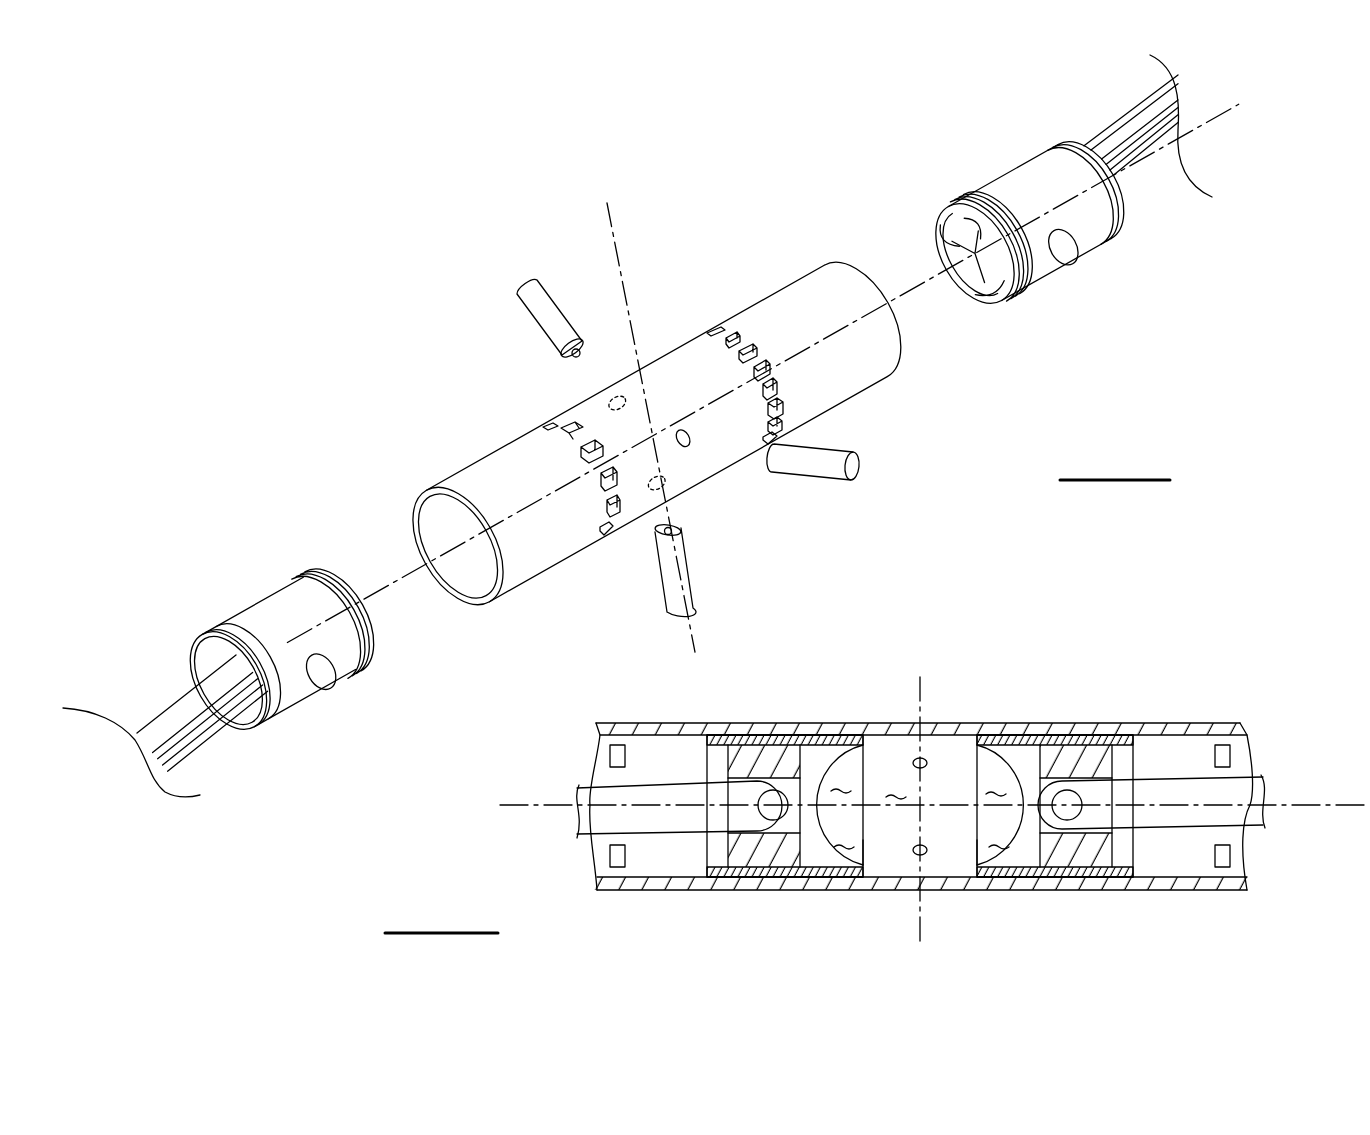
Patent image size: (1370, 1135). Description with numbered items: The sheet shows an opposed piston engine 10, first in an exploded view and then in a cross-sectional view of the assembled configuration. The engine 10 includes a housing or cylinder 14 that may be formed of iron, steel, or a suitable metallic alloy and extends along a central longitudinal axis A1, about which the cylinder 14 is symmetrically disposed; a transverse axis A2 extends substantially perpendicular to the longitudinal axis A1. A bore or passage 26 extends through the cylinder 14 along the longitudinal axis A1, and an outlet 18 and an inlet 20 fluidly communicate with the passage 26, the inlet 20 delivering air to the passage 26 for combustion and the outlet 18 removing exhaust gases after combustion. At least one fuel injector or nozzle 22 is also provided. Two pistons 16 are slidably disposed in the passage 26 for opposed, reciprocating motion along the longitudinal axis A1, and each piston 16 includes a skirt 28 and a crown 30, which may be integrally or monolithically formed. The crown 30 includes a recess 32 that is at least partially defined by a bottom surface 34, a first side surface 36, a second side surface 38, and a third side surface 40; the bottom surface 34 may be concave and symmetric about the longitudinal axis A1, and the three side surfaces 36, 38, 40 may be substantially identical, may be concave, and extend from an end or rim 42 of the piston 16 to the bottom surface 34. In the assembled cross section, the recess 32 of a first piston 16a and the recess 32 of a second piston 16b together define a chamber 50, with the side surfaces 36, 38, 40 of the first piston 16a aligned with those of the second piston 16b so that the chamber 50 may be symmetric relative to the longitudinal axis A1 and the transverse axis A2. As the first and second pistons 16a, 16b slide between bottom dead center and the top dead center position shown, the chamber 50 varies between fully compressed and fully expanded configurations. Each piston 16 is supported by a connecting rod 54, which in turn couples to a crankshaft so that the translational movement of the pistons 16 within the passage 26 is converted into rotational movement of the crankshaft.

In FIG. 1, the engine 10 is at (277, 427).
In FIG. 2, the engine 10 is at (1118, 677).
In FIG. 1, the cylinder 14 is at (503, 443).
In FIG. 2, the cylinder 14 is at (827, 720).
In FIG. 1, the piston 16 is at (656, 416).
In FIG. 2, the first piston 16a is at (697, 867).
In FIG. 2, the second piston 16b is at (1135, 857).
In FIG. 1, the outlet 18 is at (567, 430).
In FIG. 2, the outlet 18 is at (613, 760).
In FIG. 1, the inlet 20 is at (737, 333).
In FIG. 2, the inlet 20 is at (1228, 757).
In FIG. 1, the fuel injector or nozzle 22 is at (510, 292).
In FIG. 1, the passage 26 is at (478, 583).
In FIG. 2, the passage 26 is at (1230, 850).
In FIG. 1, the skirt 28 is at (267, 607).
In FIG. 2, the skirt 28 is at (753, 742).
In FIG. 1, the crown 30 is at (347, 577).
In FIG. 1, the recess 32 is at (700, 374).
In FIG. 2, the recess 32 is at (920, 807).
In FIG. 1, the bottom surface 34 is at (1027, 287).
In FIG. 1, the first side surface 36 is at (950, 230).
In FIG. 2, the first side surface 36 is at (918, 779).
In FIG. 1, the second side surface 38 is at (970, 195).
In FIG. 2, the second side surface 38 is at (921, 834).
In FIG. 1, the third side surface 40 is at (983, 295).
In FIG. 2, the third side surface 40 is at (868, 840).
In FIG. 1, the rim 42 is at (370, 637).
In FIG. 2, the chamber 50 is at (895, 784).
In FIG. 1, the connecting rod 54 is at (163, 720).
In FIG. 2, the connecting rod 54 is at (653, 787).
In FIG. 1, the longitudinal axis A1 is at (1212, 125).
In FIG. 2, the longitudinal axis A1 is at (1318, 803).
In FIG. 1, the transverse axis A2 is at (613, 232).
In FIG. 2, the transverse axis A2 is at (921, 677).